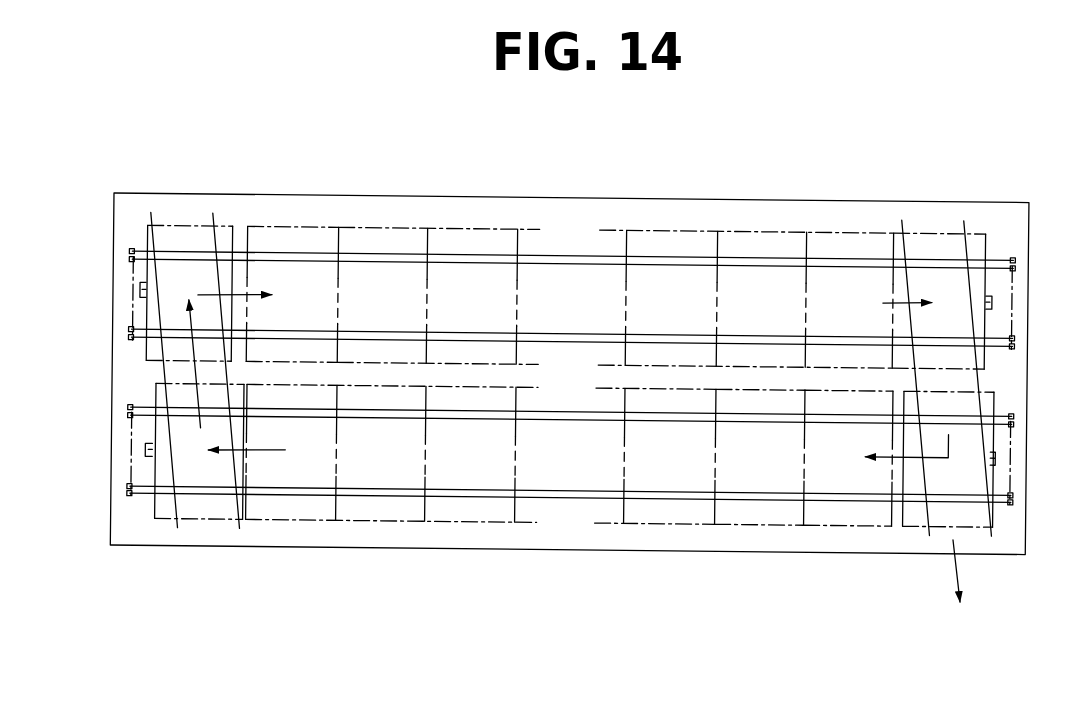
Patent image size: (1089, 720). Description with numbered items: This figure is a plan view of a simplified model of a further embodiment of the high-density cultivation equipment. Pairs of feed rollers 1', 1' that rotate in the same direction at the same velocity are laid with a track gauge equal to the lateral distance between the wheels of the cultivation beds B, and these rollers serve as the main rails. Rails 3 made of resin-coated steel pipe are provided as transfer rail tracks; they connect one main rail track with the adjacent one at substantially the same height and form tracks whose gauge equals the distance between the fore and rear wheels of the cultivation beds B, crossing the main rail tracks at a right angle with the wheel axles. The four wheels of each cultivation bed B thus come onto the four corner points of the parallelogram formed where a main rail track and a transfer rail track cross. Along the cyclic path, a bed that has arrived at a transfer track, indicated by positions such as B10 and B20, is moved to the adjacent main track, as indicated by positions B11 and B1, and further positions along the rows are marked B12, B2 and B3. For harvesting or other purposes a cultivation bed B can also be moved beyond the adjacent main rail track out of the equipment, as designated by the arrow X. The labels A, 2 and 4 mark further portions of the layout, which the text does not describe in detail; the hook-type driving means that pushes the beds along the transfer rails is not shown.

The feed rollers 1' is at (571, 377).
The end frame 2 is at (132, 306).
The rails 3 is at (171, 418).
The stopper 4 is at (142, 288).
The section A is at (270, 194).
The cultivation beds B is at (415, 225).
The cultivation bed position B1 is at (910, 530).
The block B2 is at (818, 525).
The block B3 is at (728, 525).
The cultivation bed position B10 is at (217, 516).
The cultivation bed position B11 is at (180, 225).
The block B12 is at (320, 225).
The cultivation bed position B20 is at (917, 232).
The outward moving direction X is at (958, 590).